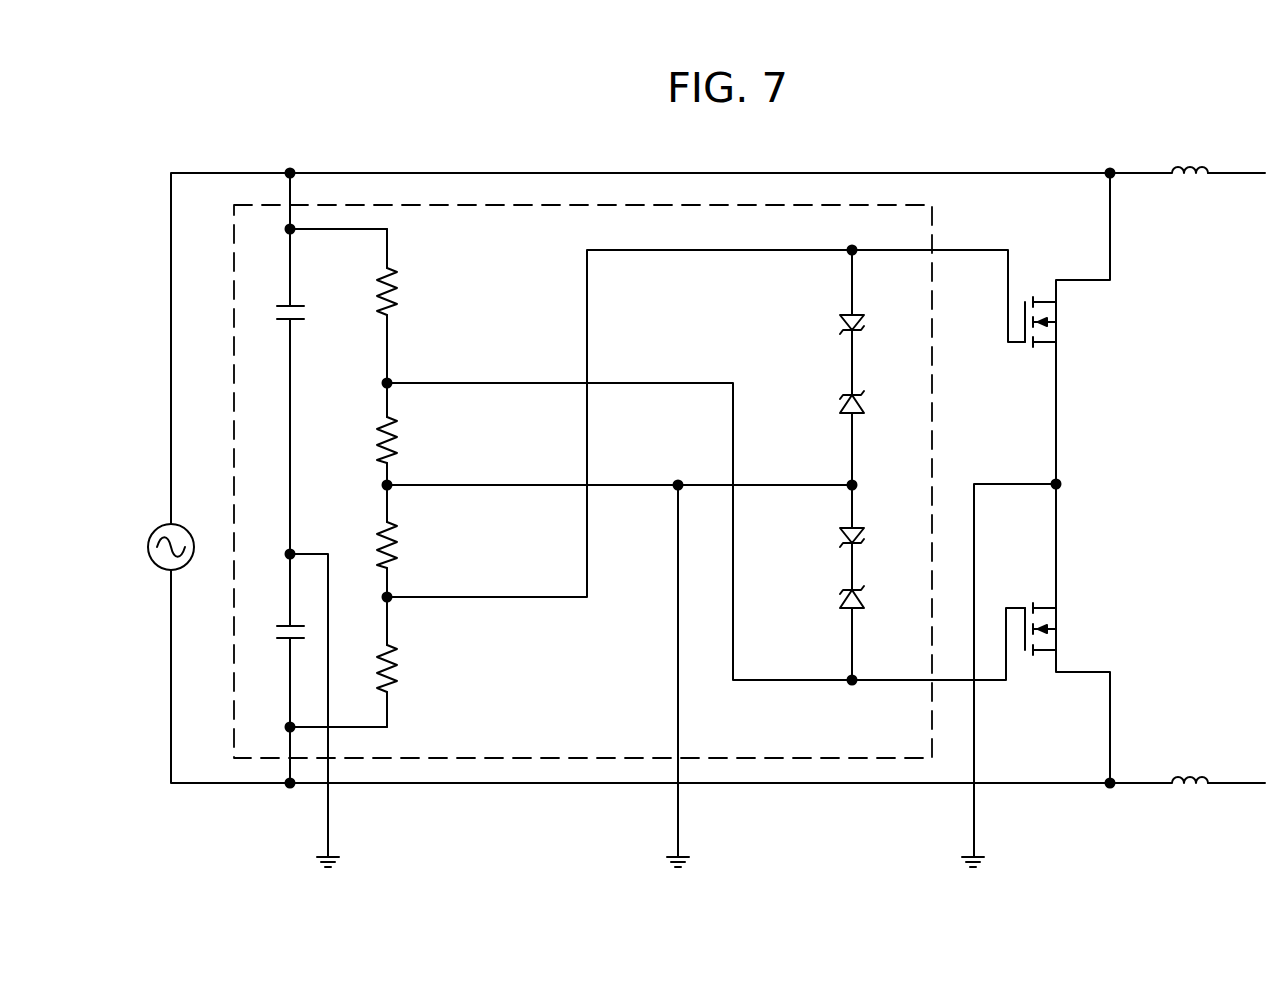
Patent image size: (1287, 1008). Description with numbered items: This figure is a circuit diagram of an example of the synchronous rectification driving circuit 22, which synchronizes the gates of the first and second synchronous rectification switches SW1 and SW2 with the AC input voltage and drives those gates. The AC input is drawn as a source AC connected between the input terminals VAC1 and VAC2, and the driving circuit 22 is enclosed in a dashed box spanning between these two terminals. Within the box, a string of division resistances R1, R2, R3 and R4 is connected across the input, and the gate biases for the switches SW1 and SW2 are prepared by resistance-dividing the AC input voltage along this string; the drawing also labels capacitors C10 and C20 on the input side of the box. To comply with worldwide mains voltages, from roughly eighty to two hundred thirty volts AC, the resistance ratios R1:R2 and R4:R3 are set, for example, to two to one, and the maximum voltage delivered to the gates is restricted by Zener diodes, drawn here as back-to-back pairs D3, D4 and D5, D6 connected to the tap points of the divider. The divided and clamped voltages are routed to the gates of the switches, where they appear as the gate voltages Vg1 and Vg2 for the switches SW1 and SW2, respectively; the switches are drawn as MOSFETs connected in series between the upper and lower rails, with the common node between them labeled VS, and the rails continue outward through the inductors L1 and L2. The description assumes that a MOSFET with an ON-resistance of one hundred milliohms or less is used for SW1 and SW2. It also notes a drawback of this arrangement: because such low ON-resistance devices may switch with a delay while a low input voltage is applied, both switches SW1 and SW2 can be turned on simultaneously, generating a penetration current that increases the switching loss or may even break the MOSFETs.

The synchronous rectification driving circuit 22 is at (857, 204).
The AC power source AC is at (156, 547).
The first AC input terminal VAC1 is at (290, 157).
The second AC input terminal VAC2 is at (288, 802).
The first capacitor C10 is at (275, 297).
The second capacitor C20 is at (275, 615).
The division resistance R1 is at (450, 297).
The division resistance R2 is at (451, 442).
The division resistance R3 is at (452, 547).
The division resistance R4 is at (449, 677).
The Zener diode D3 is at (830, 324).
The Zener diode D4 is at (830, 404).
The zener diode D5 is at (830, 535).
The zener diode D6 is at (830, 597).
The first synchronous rectification switch SW1 is at (1067, 328).
The second synchronous rectification switch SW2 is at (1067, 633).
The first gate voltage Vg1 is at (1004, 359).
The second gate voltage Vg2 is at (1008, 589).
The source voltage node VS is at (1032, 664).
The first inductor L1 is at (1159, 154).
The second inductor L2 is at (1159, 761).